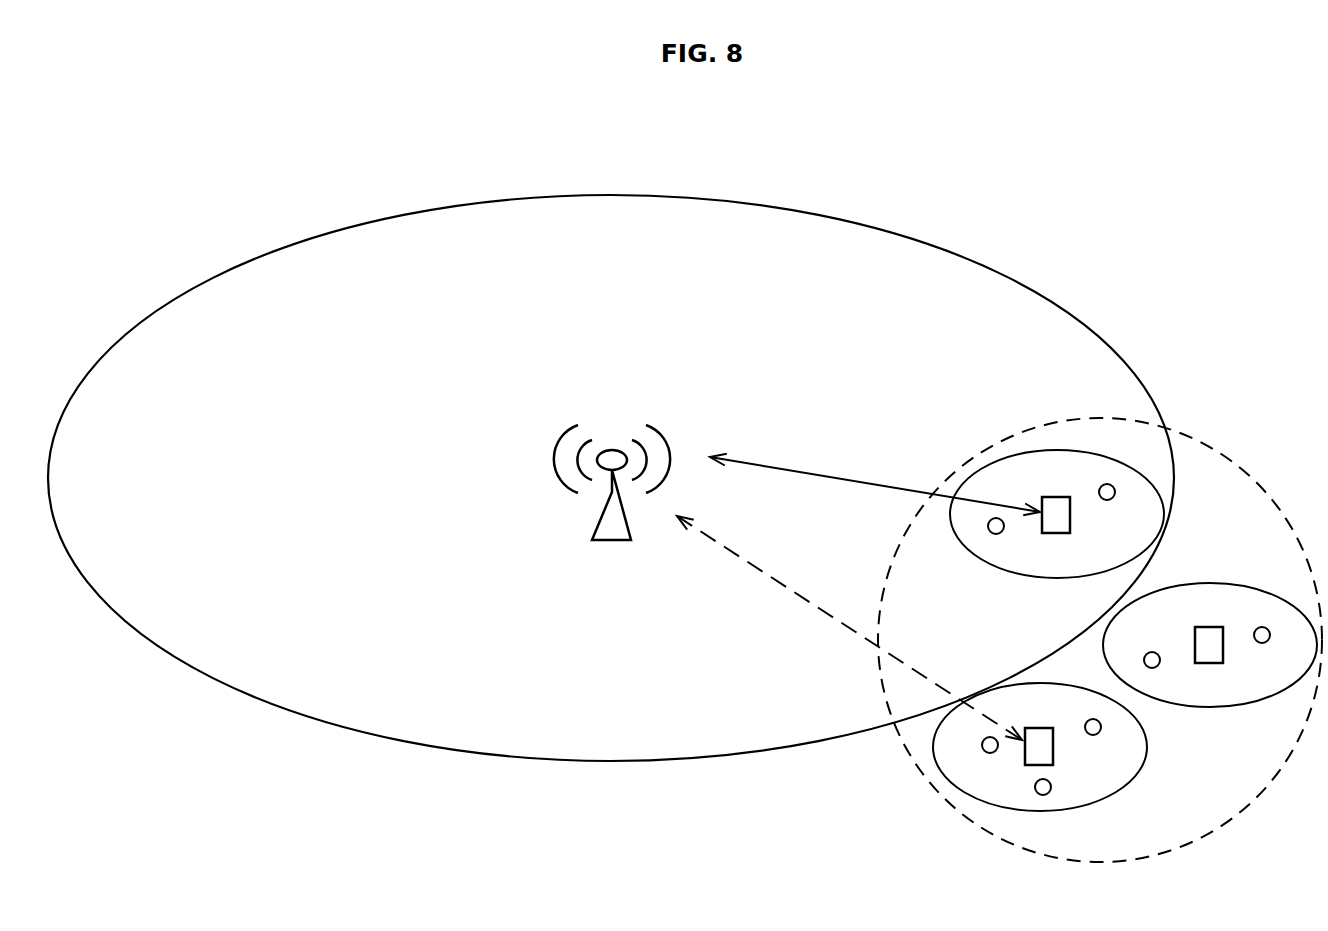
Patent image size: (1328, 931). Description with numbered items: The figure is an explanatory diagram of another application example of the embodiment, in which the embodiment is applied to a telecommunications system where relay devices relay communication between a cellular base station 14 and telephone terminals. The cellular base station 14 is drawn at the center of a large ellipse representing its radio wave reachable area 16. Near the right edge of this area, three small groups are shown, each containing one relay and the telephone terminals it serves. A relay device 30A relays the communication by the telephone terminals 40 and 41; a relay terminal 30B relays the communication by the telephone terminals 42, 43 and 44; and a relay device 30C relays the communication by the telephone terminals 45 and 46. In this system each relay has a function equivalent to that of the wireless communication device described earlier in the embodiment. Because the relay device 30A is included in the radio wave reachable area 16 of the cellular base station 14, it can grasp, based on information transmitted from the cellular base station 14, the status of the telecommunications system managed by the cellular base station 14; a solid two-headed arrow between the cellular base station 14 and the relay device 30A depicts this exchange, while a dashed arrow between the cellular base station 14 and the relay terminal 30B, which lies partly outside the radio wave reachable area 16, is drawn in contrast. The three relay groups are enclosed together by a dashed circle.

The radio wave reachable area 16 is at (611, 197).
The cellular base station 14 is at (594, 520).
The relay device 30A is at (1056, 501).
The relay terminal 30B is at (1039, 732).
The relay device 30C is at (1209, 631).
The telephone terminal 40 is at (996, 534).
The telephone terminal 41 is at (1107, 500).
The telephone terminal 42 is at (982, 745).
The telephone terminal 43 is at (1043, 795).
The telephone terminal 44 is at (1093, 735).
The telephone terminal 45 is at (1152, 652).
The telephone terminal 46 is at (1262, 643).